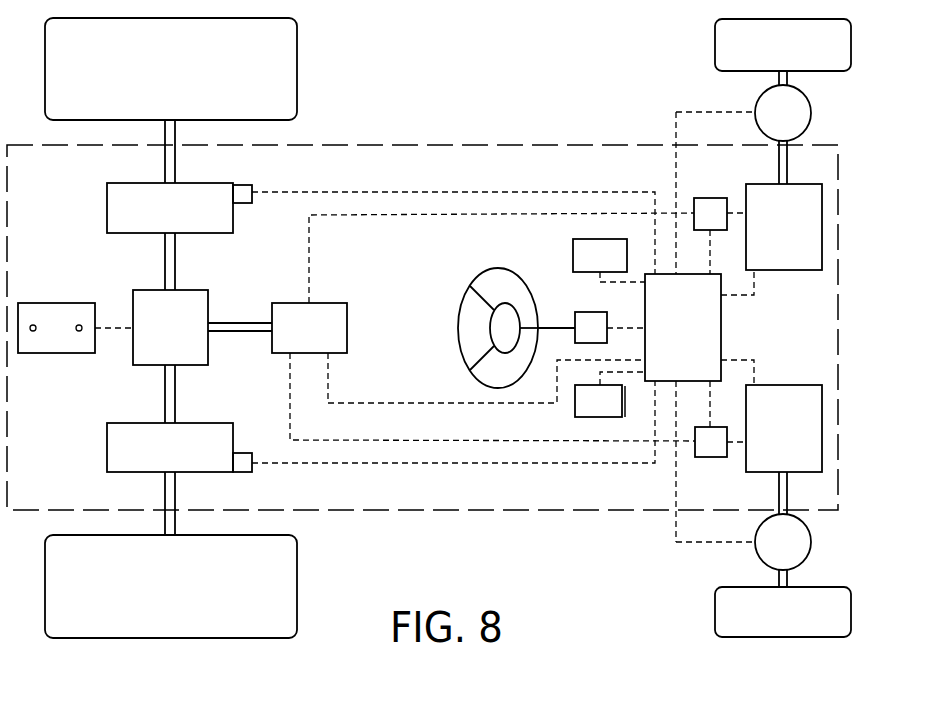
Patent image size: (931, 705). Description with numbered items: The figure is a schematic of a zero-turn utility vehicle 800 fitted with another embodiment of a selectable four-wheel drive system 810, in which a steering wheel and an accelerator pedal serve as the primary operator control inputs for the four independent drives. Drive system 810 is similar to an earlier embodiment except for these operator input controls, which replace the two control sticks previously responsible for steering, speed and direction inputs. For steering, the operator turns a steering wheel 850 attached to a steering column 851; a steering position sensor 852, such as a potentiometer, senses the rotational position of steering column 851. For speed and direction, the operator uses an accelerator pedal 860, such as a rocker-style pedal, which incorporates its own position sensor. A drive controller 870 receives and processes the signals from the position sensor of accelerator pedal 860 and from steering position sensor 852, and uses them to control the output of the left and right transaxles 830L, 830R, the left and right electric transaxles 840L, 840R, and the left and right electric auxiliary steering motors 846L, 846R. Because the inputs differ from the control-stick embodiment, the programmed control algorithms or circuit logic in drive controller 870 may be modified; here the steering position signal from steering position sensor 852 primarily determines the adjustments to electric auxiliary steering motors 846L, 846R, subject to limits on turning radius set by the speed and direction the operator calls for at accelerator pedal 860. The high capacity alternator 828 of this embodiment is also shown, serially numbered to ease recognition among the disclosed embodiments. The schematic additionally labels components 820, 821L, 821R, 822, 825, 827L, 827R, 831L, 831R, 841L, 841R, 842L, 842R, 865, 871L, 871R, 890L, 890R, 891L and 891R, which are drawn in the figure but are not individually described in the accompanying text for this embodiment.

The utility vehicle 800 is at (389, 100).
The selectable four-wheel drive system 810 is at (70, 187).
The prime mover 820 is at (208, 352).
The left prime mover output shaft 821L is at (163, 262).
The right prime mover output shaft 821R is at (163, 393).
The alternator drive shaft 822 is at (238, 320).
The battery 825 is at (33, 302).
The left rectifier 827L is at (709, 198).
The right rectifier 827R is at (710, 458).
The high capacity alternator 828 is at (347, 327).
The transaxle 830L is at (107, 208).
The transaxle 830R is at (107, 447).
The left transmission output shaft 831L is at (165, 155).
The right transmission output shaft 831R is at (165, 485).
The electric transaxle 840L is at (822, 226).
The electric transaxle 840R is at (823, 427).
The left electric motor output shaft 841L is at (788, 162).
The right electric motor output shaft 841R is at (788, 493).
The left auxiliary wheel shaft 842L is at (788, 77).
The right auxiliary wheel shaft 842R is at (788, 580).
The electric auxiliary steering motor 846L is at (812, 115).
The electric auxiliary steering motor 846R is at (812, 540).
The steering wheel 850 is at (468, 288).
The steering column 851 is at (558, 325).
The steering position sensor 852 is at (582, 312).
The accelerator pedal 860 is at (578, 416).
The two/four wheel drive selector 865 is at (572, 255).
The drive controller 870 is at (721, 328).
The left transmission sensor connection 871L is at (250, 185).
The right transmission sensor connection 871R is at (247, 473).
The left drive wheel 890L is at (141, 80).
The right drive wheel 890R is at (141, 598).
The left auxiliary wheel 891L is at (753, 57).
The right auxiliary wheel 891R is at (753, 624).